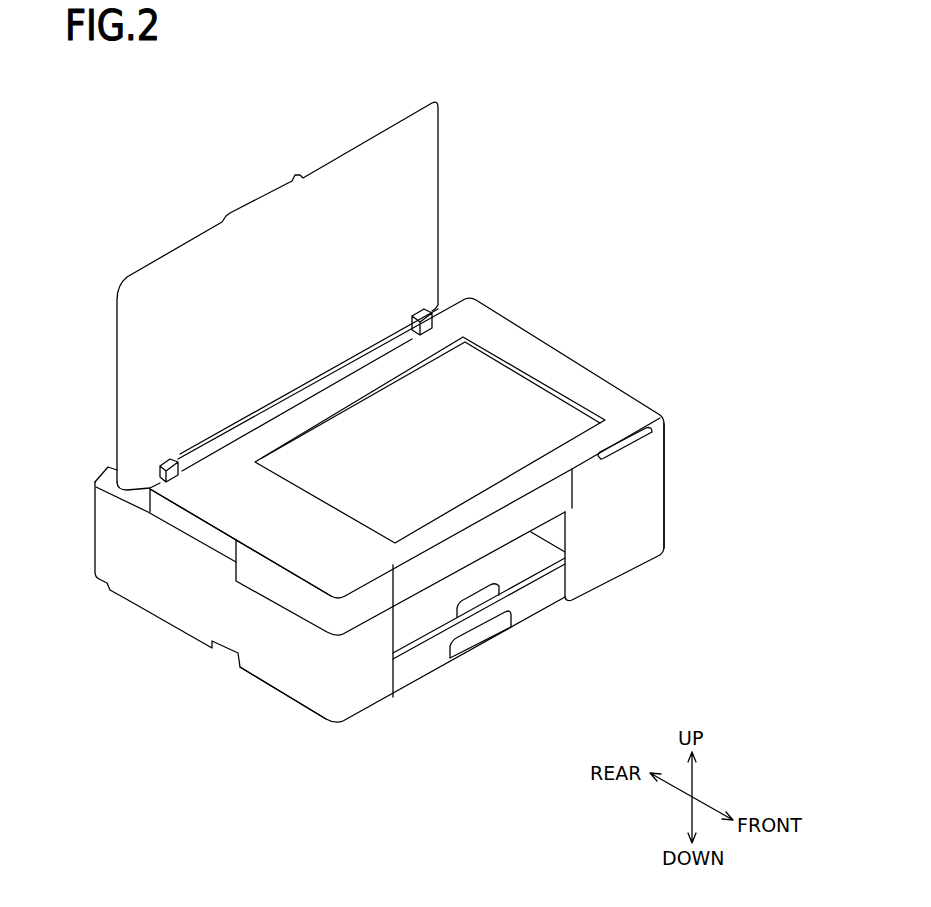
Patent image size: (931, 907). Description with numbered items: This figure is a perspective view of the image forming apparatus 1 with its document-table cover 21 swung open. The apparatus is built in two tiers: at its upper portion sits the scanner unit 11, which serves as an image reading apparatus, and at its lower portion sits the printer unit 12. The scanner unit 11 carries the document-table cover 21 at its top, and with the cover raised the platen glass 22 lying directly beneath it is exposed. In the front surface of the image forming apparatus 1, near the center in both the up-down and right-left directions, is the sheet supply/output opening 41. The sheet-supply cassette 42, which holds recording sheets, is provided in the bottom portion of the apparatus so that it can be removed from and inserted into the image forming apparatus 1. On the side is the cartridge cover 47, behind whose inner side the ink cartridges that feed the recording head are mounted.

The image forming apparatus 1 is at (626, 264).
The scanner unit 11 is at (290, 601).
The printer unit 12 is at (308, 688).
The document-table cover 21 is at (439, 182).
The platen glass 22 is at (513, 385).
The sheet supply/output opening 41 is at (418, 624).
The sheet-supply cassette 42 is at (532, 608).
The cartridge cover 47 is at (663, 497).